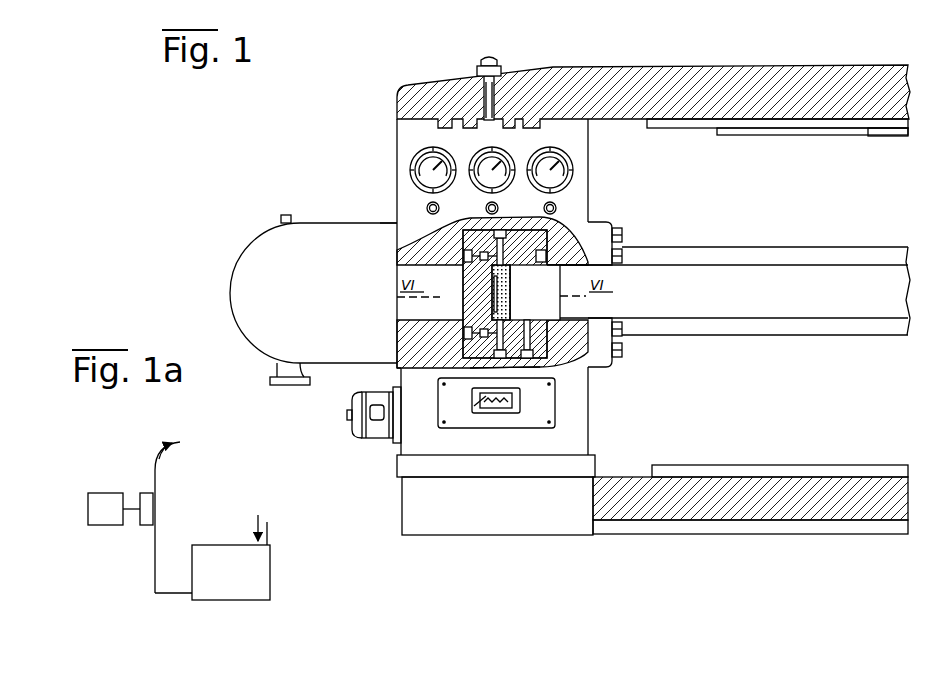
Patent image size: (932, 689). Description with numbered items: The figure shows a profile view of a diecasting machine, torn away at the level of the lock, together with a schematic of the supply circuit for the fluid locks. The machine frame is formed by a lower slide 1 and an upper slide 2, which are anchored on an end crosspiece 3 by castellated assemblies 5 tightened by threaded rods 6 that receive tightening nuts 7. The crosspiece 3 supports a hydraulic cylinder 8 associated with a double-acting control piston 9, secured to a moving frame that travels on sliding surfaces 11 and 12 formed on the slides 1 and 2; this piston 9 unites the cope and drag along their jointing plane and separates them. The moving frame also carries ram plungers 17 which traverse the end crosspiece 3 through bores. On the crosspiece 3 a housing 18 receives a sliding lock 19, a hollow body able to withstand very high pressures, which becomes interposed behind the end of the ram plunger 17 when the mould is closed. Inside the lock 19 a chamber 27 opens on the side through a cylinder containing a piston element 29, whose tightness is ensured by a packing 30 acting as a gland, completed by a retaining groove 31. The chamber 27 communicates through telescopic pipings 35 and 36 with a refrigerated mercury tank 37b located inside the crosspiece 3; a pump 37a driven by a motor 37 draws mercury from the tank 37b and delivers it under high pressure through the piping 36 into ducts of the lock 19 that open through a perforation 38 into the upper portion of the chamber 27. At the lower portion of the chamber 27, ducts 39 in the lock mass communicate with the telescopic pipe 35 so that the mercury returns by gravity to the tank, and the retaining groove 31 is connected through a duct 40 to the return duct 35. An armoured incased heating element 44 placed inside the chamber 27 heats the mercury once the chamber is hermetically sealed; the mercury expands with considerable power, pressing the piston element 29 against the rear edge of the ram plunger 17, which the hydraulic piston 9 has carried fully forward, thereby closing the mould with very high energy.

In FIG. 1, the lower slide 1 is at (768, 526).
In FIG. 1, the upper slide 2 is at (786, 80).
In FIG. 1, the end crosspiece 3 is at (438, 450).
In FIG. 1, the castellated assembly 5 is at (447, 119).
In FIG. 1, the threaded rod 6 is at (494, 63).
In FIG. 1, the tightening nut 7 is at (501, 71).
In FIG. 1, the hydraulic cylinder 8 is at (276, 347).
In FIG. 1, the control piston 9 is at (737, 261).
In FIG. 1, the sliding surface 11 is at (700, 477).
In FIG. 1, the sliding surface 12 is at (681, 129).
In FIG. 1, the ram plunger 17 is at (830, 273).
In FIG. 1, the housing 18 is at (522, 366).
In FIG. 1, the sliding lock 19 is at (468, 284).
In FIG. 1, the chamber 27 is at (505, 288).
In FIG. 1, the piston element 29 is at (552, 275).
In FIG. 1, the packing 30 is at (547, 258).
In FIG. 1, the retaining groove 31 is at (528, 268).
In FIG. 1A, the telescopic piping 35 is at (268, 531).
In FIG. 1A, the telescopic piping 36 is at (163, 441).
In FIG. 1, the motor 37 is at (381, 443).
In FIG. 1A, the motor 37 is at (93, 513).
In FIG. 1A, the pump 37a is at (150, 528).
In FIG. 1A, the mercury tank 37b is at (268, 579).
In FIG. 1, the perforation 38 is at (452, 247).
In FIG. 1, the duct 39 is at (480, 347).
In FIG. 1, the duct 40 is at (529, 328).
In FIG. 1, the heating element 44 is at (494, 300).